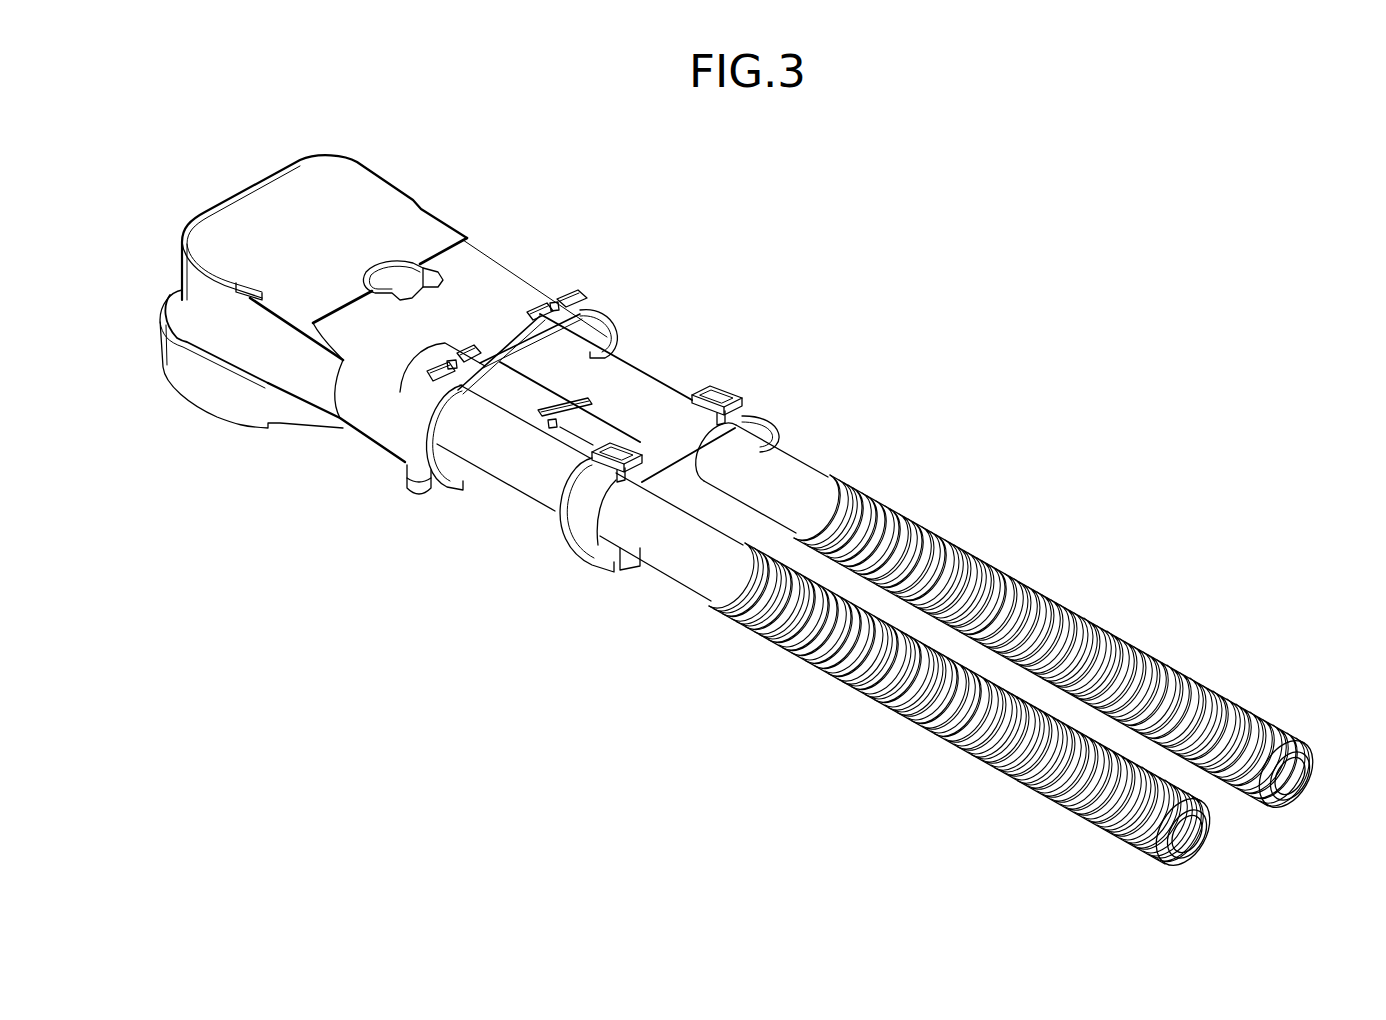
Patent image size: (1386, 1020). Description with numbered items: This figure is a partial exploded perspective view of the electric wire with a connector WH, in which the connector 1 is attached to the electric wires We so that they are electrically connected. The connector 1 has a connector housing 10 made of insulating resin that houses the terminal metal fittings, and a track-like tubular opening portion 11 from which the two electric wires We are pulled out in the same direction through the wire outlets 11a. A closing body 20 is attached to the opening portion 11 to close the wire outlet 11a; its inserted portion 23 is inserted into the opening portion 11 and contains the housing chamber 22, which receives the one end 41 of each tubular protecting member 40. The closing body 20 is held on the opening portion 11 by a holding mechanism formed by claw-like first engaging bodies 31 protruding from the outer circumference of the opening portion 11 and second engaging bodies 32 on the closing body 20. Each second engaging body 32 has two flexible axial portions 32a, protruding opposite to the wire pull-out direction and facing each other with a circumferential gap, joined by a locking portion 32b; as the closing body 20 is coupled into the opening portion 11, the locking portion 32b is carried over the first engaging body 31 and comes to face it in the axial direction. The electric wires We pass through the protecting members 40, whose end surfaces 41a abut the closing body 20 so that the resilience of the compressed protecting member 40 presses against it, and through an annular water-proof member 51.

The connector 1 is at (198, 177).
The connector housing 10 is at (346, 187).
The opening portion 11 is at (420, 438).
The wire outlet 11a is at (632, 342).
The closing body 20 is at (546, 535).
The housing chamber 22 is at (772, 441).
The inserted portion 23 is at (578, 536).
The first engaging body 31 is at (443, 345).
The second engaging body 32 is at (802, 292).
The axial portion 32a is at (708, 390).
The locking portion 32b is at (726, 390).
The protecting member 40 is at (1113, 603).
The one end 41 is at (883, 500).
The end surface 41a is at (848, 487).
The annular water-proof member 51 is at (505, 380).
The electric wire We is at (1296, 781).
The electric wire with a connector WH is at (805, 170).